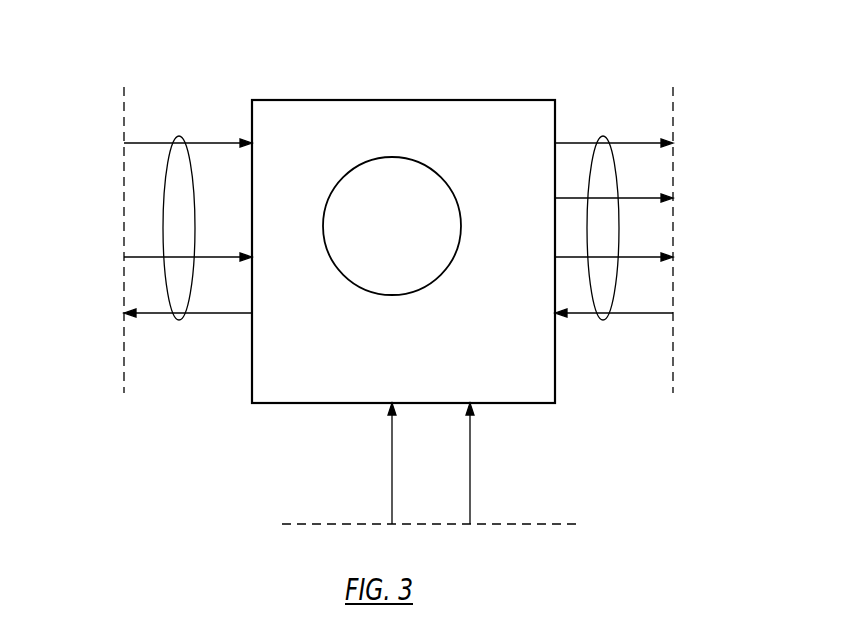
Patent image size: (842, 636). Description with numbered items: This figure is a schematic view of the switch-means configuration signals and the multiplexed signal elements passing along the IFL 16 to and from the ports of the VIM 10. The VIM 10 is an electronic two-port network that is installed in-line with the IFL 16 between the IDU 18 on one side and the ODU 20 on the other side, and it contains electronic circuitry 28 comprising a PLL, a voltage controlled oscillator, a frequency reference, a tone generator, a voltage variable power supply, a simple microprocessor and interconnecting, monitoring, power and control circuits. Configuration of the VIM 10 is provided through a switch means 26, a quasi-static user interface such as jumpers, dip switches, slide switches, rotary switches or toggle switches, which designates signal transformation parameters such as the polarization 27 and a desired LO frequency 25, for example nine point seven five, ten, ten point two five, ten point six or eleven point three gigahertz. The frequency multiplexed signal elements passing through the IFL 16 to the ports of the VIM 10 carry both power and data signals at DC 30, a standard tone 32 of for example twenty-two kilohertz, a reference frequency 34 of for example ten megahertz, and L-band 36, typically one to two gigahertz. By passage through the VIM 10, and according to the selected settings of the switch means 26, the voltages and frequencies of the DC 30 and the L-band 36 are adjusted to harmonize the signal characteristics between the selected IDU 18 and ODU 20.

The VIM 10 is at (412, 100).
The IFL 16 is at (180, 137).
The IDU 18 is at (100, 113).
The ODU 20 is at (716, 114).
The LO frequency 25 is at (470, 444).
The switch means 26 is at (480, 526).
The polarization 27 is at (392, 444).
The electronic circuitry 28 is at (405, 234).
The DC 30 is at (398, 143).
The standard tone 32 is at (595, 198).
The reference frequency 34 is at (398, 257).
The L-band 36 is at (398, 313).